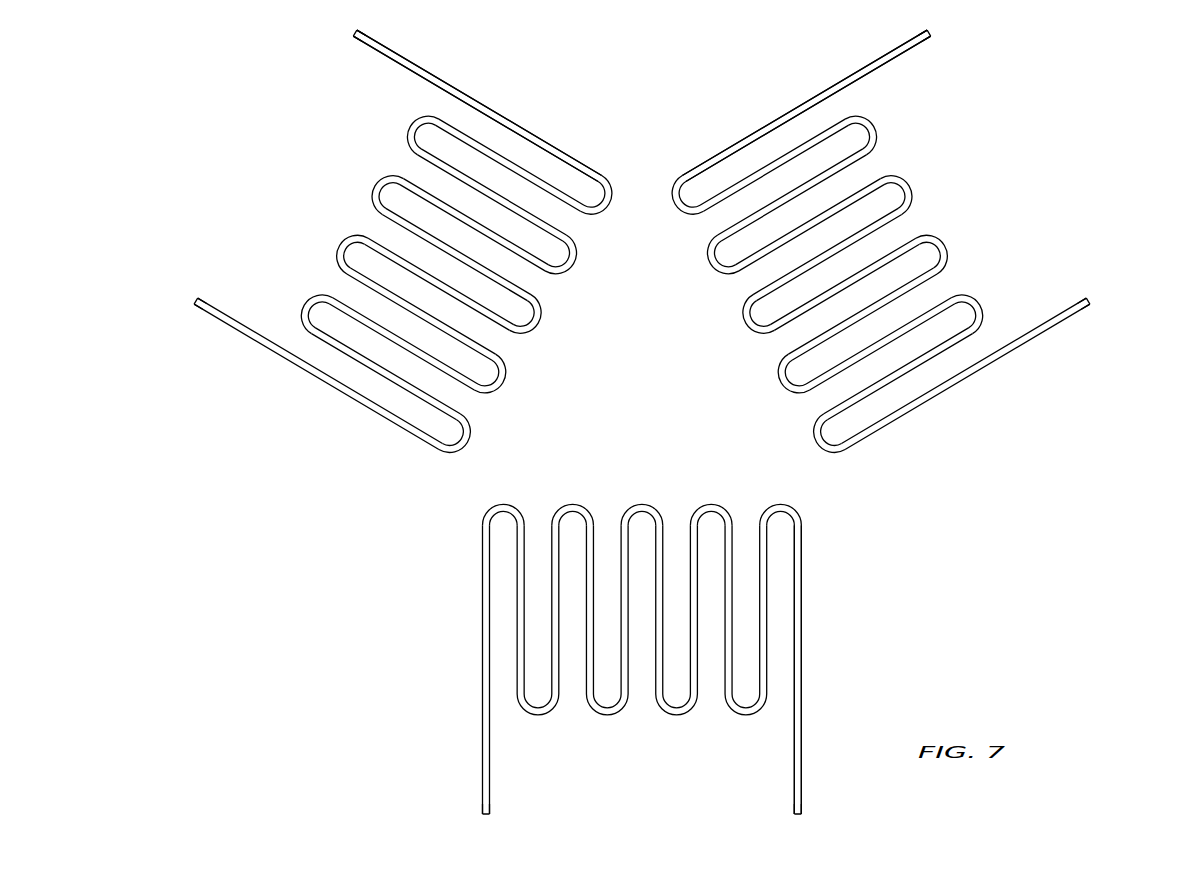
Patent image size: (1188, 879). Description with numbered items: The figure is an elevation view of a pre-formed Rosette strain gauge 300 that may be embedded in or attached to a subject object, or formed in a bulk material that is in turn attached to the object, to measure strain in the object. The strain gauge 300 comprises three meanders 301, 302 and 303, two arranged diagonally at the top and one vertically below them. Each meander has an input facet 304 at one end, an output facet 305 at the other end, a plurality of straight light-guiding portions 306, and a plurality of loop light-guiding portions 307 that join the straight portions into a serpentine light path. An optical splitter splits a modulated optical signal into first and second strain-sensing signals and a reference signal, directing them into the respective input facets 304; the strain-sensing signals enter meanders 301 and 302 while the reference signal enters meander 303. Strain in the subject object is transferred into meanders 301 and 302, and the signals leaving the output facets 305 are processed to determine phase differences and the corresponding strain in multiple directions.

The Rosette strain gauge 300 is at (650, 422).
The meander 301 is at (828, 89).
The meander 302 is at (478, 102).
The meander 303 is at (805, 757).
The input facet 304 is at (194, 305).
The output facet 305 is at (352, 34).
The straight light-guiding portion 306 is at (487, 188).
The loop light-guiding portion 307 is at (411, 134).